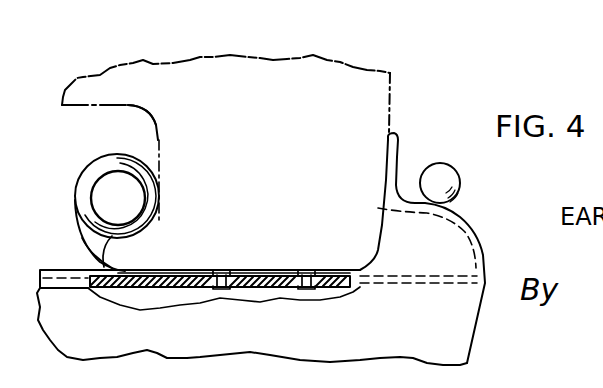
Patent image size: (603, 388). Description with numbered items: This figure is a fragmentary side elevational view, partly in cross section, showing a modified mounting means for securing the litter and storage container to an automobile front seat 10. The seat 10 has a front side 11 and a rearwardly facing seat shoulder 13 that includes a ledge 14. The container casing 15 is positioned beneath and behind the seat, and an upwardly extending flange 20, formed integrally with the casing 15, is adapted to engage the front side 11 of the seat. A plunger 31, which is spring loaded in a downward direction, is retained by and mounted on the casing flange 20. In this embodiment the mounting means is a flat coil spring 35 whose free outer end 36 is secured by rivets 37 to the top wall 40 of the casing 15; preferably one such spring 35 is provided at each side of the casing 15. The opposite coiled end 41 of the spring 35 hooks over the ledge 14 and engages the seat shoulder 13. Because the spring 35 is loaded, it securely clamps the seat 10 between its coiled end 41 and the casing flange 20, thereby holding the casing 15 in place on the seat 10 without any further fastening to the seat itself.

The automobile front seat 10 is at (195, 60).
The front side 11 is at (397, 92).
The seat shoulder 13 is at (153, 118).
The ledge 14 is at (143, 234).
The casing 15 is at (480, 309).
The flange 20 is at (400, 145).
The plunger 31 is at (461, 179).
The flat coil spring 35 is at (150, 268).
The free outer end 36 is at (309, 268).
The rivets 37 is at (224, 268).
The top wall 40 is at (52, 268).
The coiled end 41 is at (107, 154).